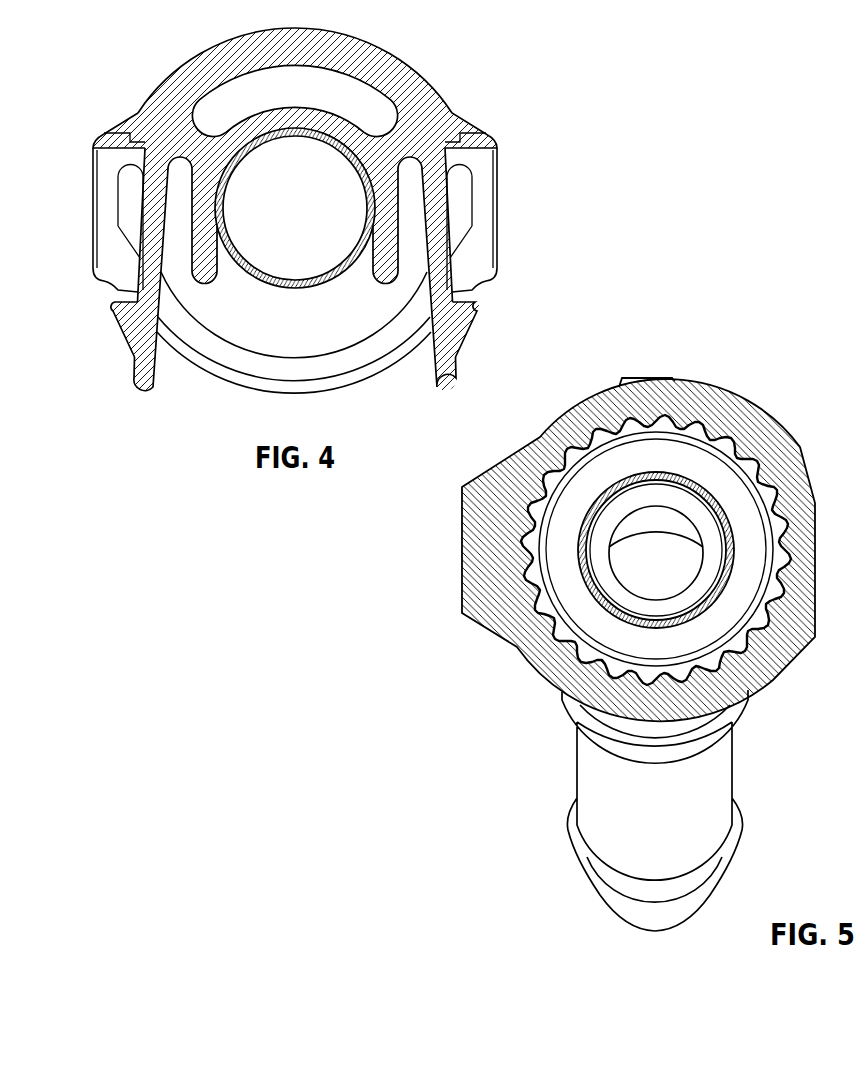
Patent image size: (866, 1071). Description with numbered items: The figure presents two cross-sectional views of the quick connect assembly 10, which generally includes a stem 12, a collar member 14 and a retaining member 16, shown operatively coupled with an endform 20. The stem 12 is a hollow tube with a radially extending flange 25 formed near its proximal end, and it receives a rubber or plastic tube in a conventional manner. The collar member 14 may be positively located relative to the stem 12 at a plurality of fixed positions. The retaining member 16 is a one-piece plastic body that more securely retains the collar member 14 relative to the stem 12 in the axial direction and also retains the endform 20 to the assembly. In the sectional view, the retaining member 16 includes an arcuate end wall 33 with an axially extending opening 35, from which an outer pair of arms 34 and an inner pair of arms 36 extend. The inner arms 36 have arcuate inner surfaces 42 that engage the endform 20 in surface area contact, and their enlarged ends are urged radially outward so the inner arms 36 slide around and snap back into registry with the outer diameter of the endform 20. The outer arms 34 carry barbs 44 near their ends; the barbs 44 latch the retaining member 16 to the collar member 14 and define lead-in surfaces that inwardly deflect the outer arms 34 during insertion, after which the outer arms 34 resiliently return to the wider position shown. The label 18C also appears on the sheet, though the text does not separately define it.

In FIG. 4, the quick connect assembly 10 is at (295, 282).
In FIG. 5, the quick connect assembly 10 is at (606, 599).
In FIG. 5, the stem 12 is at (567, 791).
In FIG. 4, the collar member 14 is at (509, 237).
In FIG. 5, the collar member 14 is at (452, 616).
In FIG. 4, the retaining member 16 is at (487, 329).
In FIG. 4, the connector port 18C is at (0, 499).
In FIG. 4, the endform 20 is at (305, 288).
In FIG. 5, the endform 20 is at (673, 476).
In FIG. 4, the radially extending flange 25 is at (15, 530).
In FIG. 4, the end wall 33 is at (360, 53).
In FIG. 4, the outer pair of arms 34 is at (105, 278).
In FIG. 4, the axially extending opening 35 is at (368, 98).
In FIG. 4, the inner pair of arms 36 is at (190, 230).
In FIG. 4, the arcuate inner surfaces 42 is at (373, 213).
In FIG. 4, the barbs 44 is at (123, 322).